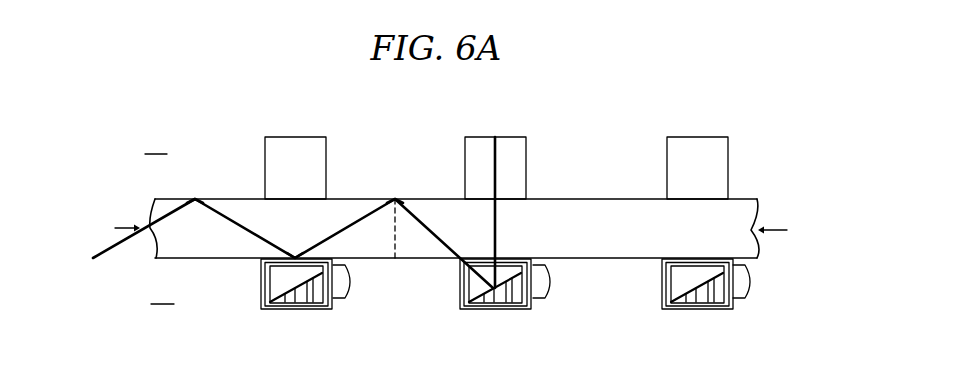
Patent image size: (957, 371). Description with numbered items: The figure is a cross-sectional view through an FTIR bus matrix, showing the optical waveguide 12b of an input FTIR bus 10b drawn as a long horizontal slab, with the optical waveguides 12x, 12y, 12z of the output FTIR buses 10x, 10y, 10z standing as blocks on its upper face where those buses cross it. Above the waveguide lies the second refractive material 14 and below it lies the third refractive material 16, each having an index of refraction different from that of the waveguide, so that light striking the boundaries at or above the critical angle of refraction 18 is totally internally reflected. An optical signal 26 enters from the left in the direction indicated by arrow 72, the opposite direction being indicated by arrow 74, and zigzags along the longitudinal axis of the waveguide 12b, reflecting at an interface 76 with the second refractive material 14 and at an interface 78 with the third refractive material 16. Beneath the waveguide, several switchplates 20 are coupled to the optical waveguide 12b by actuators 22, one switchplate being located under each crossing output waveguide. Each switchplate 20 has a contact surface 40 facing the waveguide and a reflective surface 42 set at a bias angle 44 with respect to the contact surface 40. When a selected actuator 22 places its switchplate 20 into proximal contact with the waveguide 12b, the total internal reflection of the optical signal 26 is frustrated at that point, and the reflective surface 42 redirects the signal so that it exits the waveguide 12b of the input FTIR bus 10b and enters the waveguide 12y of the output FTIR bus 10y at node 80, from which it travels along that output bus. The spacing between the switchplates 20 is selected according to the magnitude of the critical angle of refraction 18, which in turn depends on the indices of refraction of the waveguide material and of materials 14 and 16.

The output FTIR bus 10x is at (290, 132).
The output FTIR bus 10y is at (490, 132).
The output FTIR bus 10z is at (700, 132).
The input FTIR bus 10b is at (454, 197).
The optical waveguide 12x is at (265, 170).
The optical waveguide 12y is at (465, 170).
The optical waveguide 12z is at (728, 168).
The optical waveguide 12b is at (598, 241).
The second refractive material 14 is at (155, 143).
The third refractive material 16 is at (162, 293).
The critical angle of refraction 18 is at (362, 218).
The switchplate 20 is at (261, 284).
The actuator 22 is at (315, 311).
The optical signal 26 is at (352, 224).
The contact surface 40 is at (310, 264).
The reflective surface 42 is at (294, 300).
The bias angle 44 is at (345, 298).
The arrow 72 is at (110, 228).
The arrow 74 is at (787, 230).
The interface 76 is at (195, 205).
The interface 78 is at (294, 255).
The node 80 is at (500, 202).